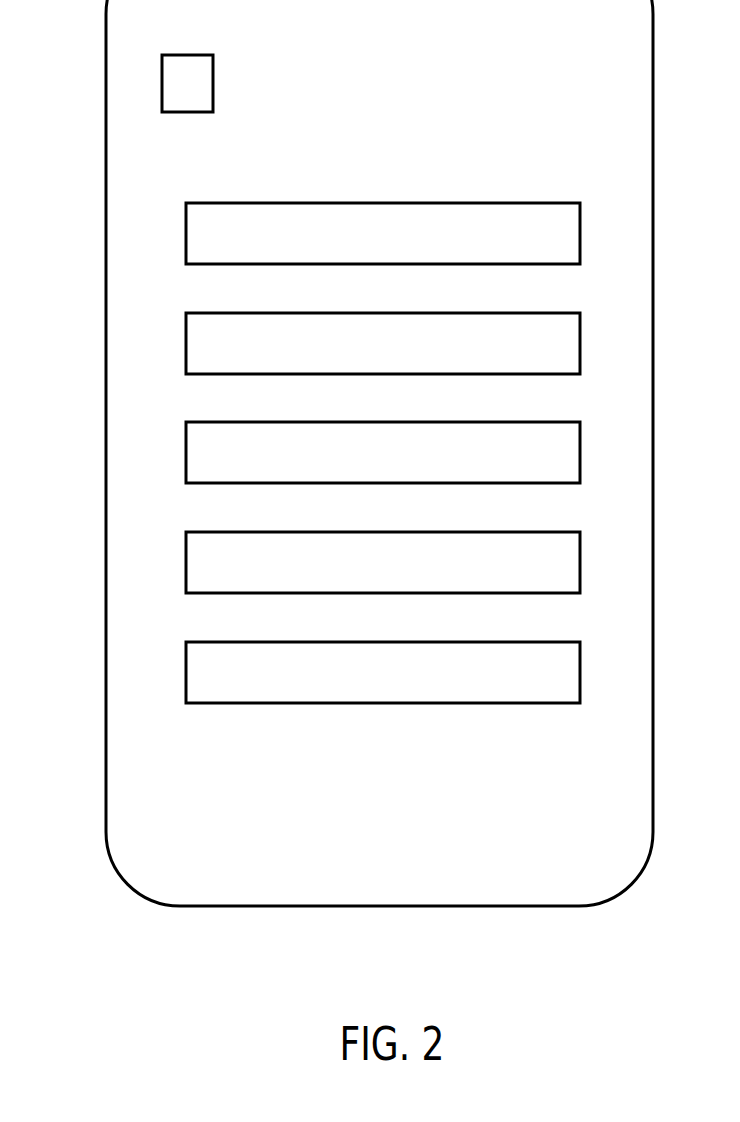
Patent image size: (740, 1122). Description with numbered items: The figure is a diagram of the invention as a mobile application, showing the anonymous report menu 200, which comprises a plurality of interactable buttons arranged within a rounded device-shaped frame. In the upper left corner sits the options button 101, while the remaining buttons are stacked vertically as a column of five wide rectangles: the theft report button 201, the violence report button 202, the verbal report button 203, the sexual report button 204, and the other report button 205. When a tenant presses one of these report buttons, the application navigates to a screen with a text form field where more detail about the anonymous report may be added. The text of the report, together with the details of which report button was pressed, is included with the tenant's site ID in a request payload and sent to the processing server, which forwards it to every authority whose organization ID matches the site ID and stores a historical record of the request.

The anonymous report menu 200 is at (365, 113).
The options button 101 is at (173, 90).
The theft report button 201 is at (365, 250).
The violence report button 202 is at (365, 360).
The verbal report button 203 is at (365, 469).
The sexual report button 204 is at (365, 579).
The other report button 205 is at (365, 689).